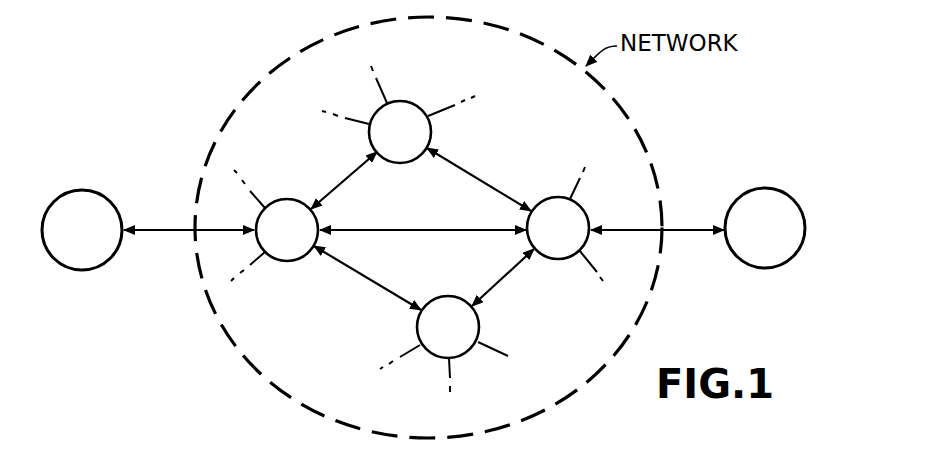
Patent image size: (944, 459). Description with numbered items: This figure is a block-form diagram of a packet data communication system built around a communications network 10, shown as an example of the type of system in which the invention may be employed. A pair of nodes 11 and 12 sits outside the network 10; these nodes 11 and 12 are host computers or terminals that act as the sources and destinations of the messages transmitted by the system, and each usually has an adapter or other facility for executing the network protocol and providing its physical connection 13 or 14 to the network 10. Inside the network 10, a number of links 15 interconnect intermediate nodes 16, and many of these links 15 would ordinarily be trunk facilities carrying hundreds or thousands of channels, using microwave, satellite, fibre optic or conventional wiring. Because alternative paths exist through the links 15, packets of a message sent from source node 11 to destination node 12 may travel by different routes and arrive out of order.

The communications network 10 is at (258, 82).
The node 11 is at (70, 268).
The node 12 is at (770, 185).
The physical connection 13 is at (160, 233).
The physical connection 14 is at (686, 233).
The link 15 is at (481, 182).
The intermediate node 16 is at (290, 199).